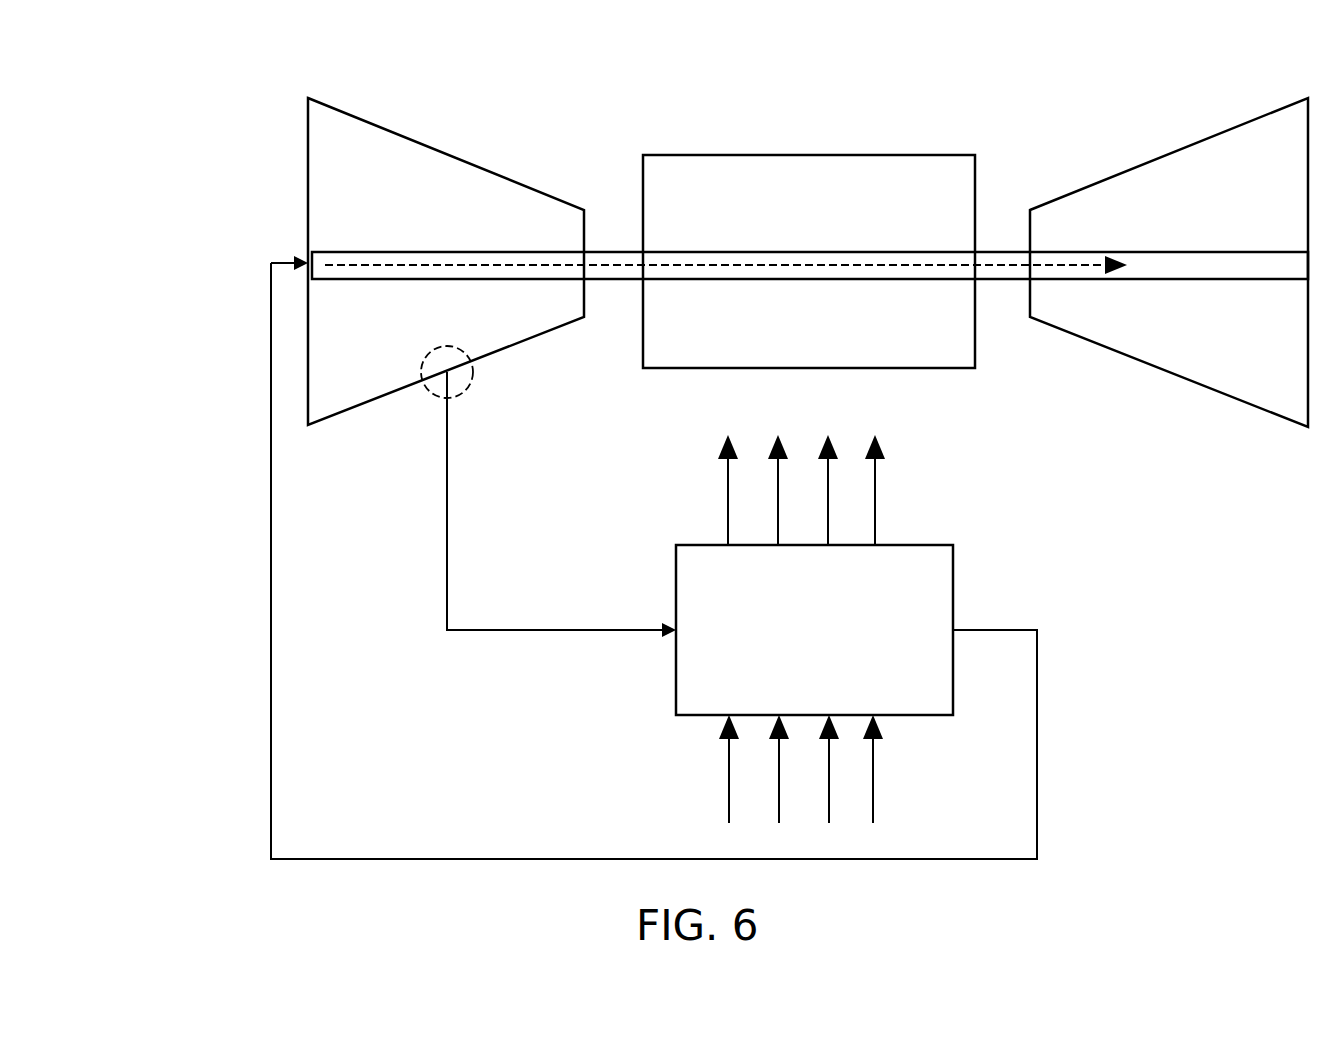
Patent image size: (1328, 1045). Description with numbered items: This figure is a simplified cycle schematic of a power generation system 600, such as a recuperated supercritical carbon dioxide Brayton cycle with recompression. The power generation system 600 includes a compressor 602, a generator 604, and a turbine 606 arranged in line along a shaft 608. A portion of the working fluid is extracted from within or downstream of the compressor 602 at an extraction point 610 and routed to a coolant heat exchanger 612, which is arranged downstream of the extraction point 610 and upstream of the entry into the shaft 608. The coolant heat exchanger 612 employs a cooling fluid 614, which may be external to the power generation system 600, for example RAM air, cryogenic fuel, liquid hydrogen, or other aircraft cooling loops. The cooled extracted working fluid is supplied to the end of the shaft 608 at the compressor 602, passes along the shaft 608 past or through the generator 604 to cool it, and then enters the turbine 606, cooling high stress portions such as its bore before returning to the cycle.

The power generation system 600 is at (152, 92).
The compressor 602 is at (450, 315).
The generator 604 is at (817, 347).
The turbine 606 is at (1190, 312).
The shaft 608 is at (614, 250).
The extraction point 610 is at (468, 380).
The coolant heat exchanger 612 is at (825, 686).
The cooling fluid 614 is at (874, 783).